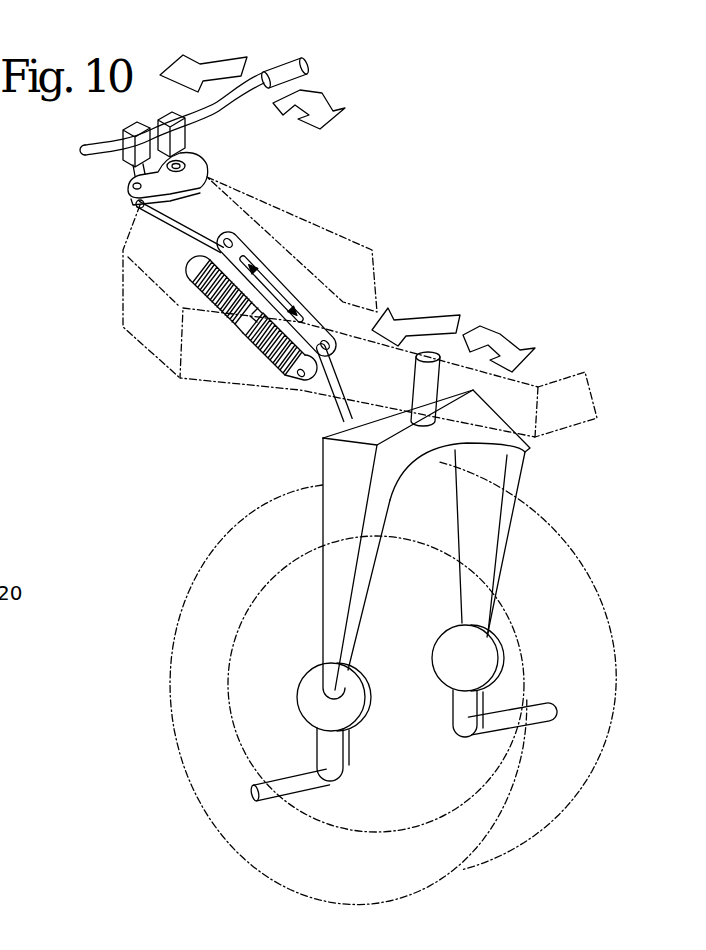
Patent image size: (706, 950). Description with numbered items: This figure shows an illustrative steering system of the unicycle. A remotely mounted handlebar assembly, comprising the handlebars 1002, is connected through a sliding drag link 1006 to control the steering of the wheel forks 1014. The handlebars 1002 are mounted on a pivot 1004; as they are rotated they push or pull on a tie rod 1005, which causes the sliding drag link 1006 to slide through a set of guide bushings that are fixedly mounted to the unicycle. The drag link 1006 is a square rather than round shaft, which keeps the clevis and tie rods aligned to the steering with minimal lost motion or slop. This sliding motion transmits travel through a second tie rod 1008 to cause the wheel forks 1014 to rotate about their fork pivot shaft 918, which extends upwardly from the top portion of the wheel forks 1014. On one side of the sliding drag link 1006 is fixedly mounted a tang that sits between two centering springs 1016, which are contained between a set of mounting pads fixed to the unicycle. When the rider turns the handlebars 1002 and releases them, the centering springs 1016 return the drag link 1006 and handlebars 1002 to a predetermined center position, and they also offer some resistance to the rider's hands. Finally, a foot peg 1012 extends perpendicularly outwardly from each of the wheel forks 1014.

The handlebars 1002 is at (312, 68).
The pivot 1004 is at (183, 167).
The tie rod 1005 is at (180, 224).
The sliding drag link 1006 is at (263, 261).
The centering springs 1016 is at (266, 371).
The second tie rod 1008 is at (341, 406).
The fork pivot shaft 918 is at (444, 379).
The wheel forks 1014 is at (322, 543).
The foot peg 1012 is at (293, 778).